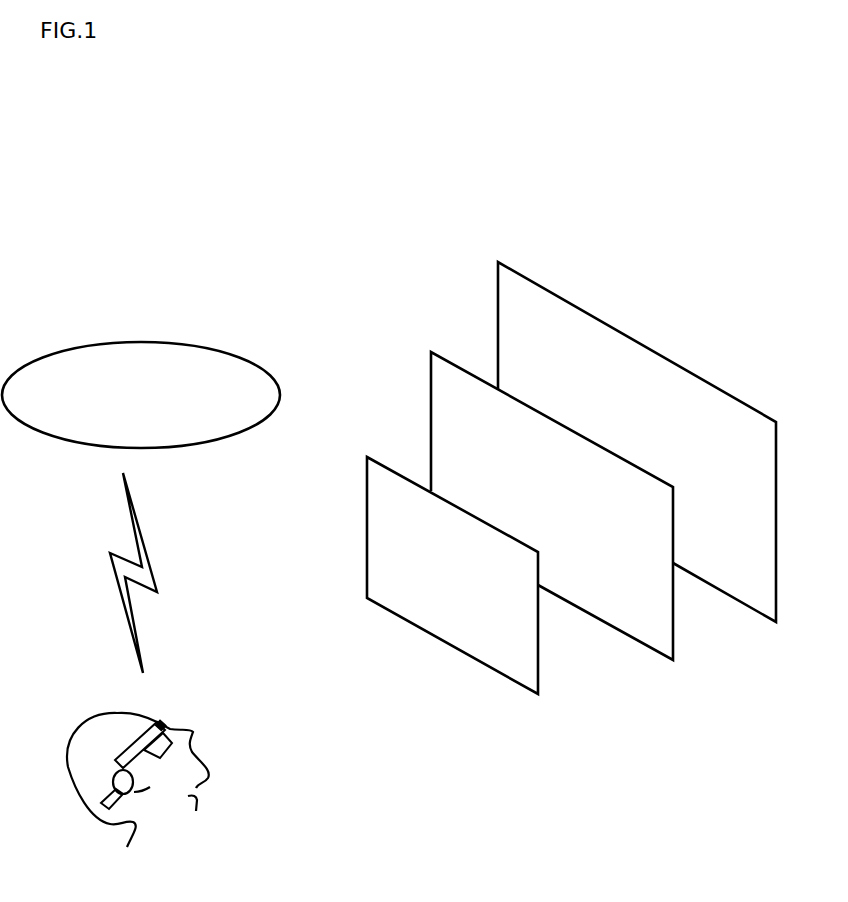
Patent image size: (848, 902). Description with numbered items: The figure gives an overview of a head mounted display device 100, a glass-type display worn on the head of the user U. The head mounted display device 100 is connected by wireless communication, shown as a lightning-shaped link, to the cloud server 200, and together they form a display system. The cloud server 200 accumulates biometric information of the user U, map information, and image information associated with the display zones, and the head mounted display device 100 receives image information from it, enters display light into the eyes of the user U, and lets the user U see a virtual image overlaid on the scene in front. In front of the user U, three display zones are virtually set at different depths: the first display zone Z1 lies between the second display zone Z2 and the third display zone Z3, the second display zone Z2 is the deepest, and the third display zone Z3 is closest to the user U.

The cloud server 200 is at (210, 346).
The head mounted display device 100 is at (167, 712).
The user U is at (85, 723).
The first display zone Z1 is at (645, 647).
The second display zone Z2 is at (743, 605).
The third display zone Z3 is at (512, 678).